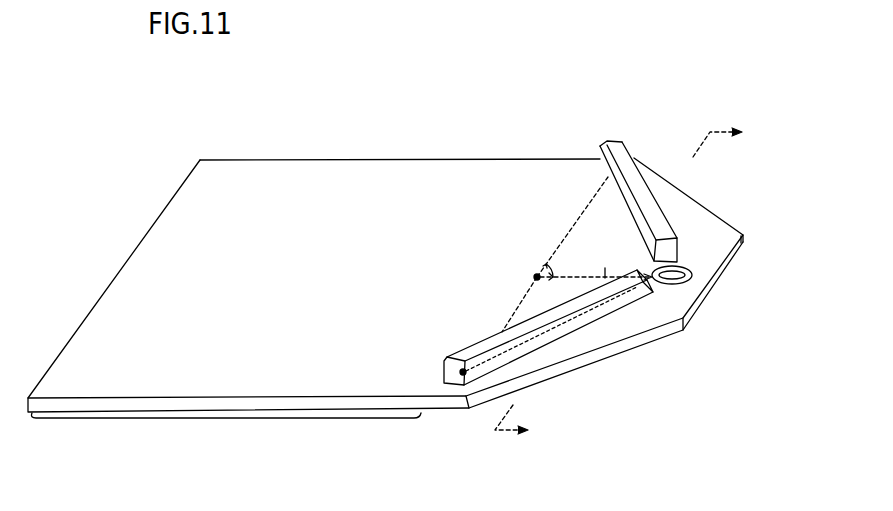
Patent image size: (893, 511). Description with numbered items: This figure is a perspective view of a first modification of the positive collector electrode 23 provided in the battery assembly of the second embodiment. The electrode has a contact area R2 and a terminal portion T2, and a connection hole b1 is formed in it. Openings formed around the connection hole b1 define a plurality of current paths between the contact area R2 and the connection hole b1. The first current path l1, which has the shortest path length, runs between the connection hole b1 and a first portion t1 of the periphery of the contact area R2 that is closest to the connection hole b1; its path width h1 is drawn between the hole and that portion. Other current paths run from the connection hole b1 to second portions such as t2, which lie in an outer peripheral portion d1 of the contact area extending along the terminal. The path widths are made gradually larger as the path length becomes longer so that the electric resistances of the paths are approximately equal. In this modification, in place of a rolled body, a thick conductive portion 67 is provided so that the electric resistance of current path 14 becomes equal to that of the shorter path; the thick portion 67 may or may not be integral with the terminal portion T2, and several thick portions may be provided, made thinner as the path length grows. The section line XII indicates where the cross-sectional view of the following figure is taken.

The positive collector electrode 23 is at (497, 99).
The thick conductive portion 67 is at (605, 140).
The current path 14 is at (603, 316).
The first portion t1 is at (533, 276).
The second portion t2 is at (460, 385).
The first current path l1 is at (580, 272).
The path width h1 is at (605, 270).
The outer peripheral portion d1 is at (522, 300).
The connection hole b1 is at (697, 278).
The terminal portion T2 is at (738, 253).
The contact area R2 is at (227, 431).
The section line XII- XII is at (632, 285).